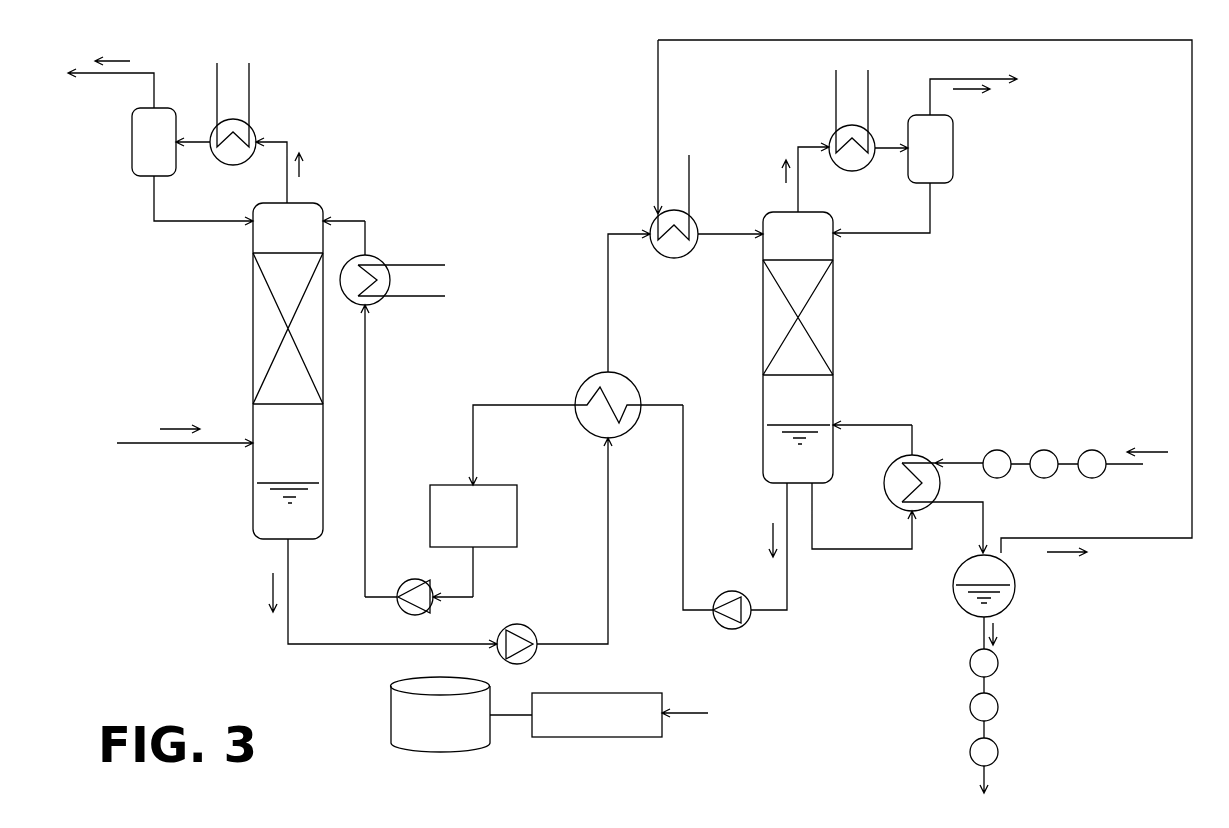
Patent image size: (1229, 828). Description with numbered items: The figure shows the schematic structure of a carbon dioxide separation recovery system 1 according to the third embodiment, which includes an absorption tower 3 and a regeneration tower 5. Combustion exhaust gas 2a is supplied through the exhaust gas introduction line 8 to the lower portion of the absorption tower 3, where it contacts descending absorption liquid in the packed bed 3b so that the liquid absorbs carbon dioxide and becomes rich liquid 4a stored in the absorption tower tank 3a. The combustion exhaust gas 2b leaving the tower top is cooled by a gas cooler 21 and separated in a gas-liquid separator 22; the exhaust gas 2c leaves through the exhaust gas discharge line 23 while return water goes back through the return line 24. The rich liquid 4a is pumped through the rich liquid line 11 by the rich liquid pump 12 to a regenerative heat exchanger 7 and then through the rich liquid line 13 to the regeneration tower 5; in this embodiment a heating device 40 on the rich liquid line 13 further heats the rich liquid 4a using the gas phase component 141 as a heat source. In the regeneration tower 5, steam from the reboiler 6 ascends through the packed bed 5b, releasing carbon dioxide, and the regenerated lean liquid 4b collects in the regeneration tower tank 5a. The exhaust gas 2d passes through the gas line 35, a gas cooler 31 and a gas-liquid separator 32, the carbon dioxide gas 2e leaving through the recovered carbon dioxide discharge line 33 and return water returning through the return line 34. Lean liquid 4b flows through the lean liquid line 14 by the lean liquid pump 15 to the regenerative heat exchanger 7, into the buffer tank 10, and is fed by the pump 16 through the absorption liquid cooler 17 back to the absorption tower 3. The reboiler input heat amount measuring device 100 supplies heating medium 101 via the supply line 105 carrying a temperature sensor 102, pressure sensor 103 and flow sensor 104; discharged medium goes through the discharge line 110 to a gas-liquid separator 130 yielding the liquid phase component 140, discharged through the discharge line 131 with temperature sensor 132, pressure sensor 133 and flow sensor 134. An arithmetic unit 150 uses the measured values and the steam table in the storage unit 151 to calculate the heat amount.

The carbon dioxide separation recovery system 1 is at (488, 103).
The combustion exhaust gas 2a is at (178, 428).
The combustion exhaust gas 2b is at (302, 176).
The exhaust gas 2c is at (118, 61).
The exhaust gas 2d is at (783, 177).
The carbon dioxide gas 2e is at (965, 92).
The absorption tower 3 is at (257, 371).
The absorption tower tank 3a is at (253, 503).
The packed bed 3b is at (253, 326).
The rich liquid 4a is at (270, 590).
The lean liquid 4b is at (770, 540).
The regeneration tower 5 is at (801, 347).
The regeneration tower tank 5a is at (764, 445).
The packed bed 5b is at (833, 316).
The reboiler 6 is at (888, 497).
The regenerative heat exchanger 7 is at (586, 382).
The exhaust gas introduction line 8 is at (167, 445).
The buffer tank 10 is at (517, 512).
The rich liquid line 11 is at (372, 645).
The rich liquid pump 12 is at (525, 626).
The rich liquid line 13 is at (608, 265).
The lean liquid line 14 is at (787, 585).
The lean liquid pump 15 is at (715, 625).
The pump 16 is at (405, 580).
The absorption liquid cooler 17 is at (372, 257).
The gas cooler 21 is at (216, 160).
The gas-liquid separator 22 is at (132, 138).
The exhaust gas discharge line 23 is at (113, 73).
The return line 24 is at (154, 202).
The gas cooler 31 is at (832, 135).
The gas-liquid separator 32 is at (953, 158).
The recovered carbon dioxide discharge line 33 is at (930, 95).
The return line 34 is at (930, 220).
The gas line 35 is at (798, 190).
The heating device 40 is at (672, 258).
The reboiler input heat amount measuring device 100 is at (1054, 400).
The heating medium 101 is at (1153, 450).
The temperature sensor 102 is at (997, 450).
The pressure sensor 103 is at (1042, 478).
The flow sensor 104 is at (1092, 450).
The supply line 105 is at (958, 462).
The discharge line 110 is at (960, 503).
The gas-liquid separator 130 is at (953, 597).
The discharge line 131 is at (981, 775).
The temperature sensor 132 is at (998, 663).
The pressure sensor 133 is at (998, 707).
The flow sensor 134 is at (998, 752).
The liquid phase component 140 is at (997, 630).
The gas phase component 141 is at (1065, 555).
The arithmetic unit 150 is at (625, 738).
The storage unit 151 is at (391, 720).